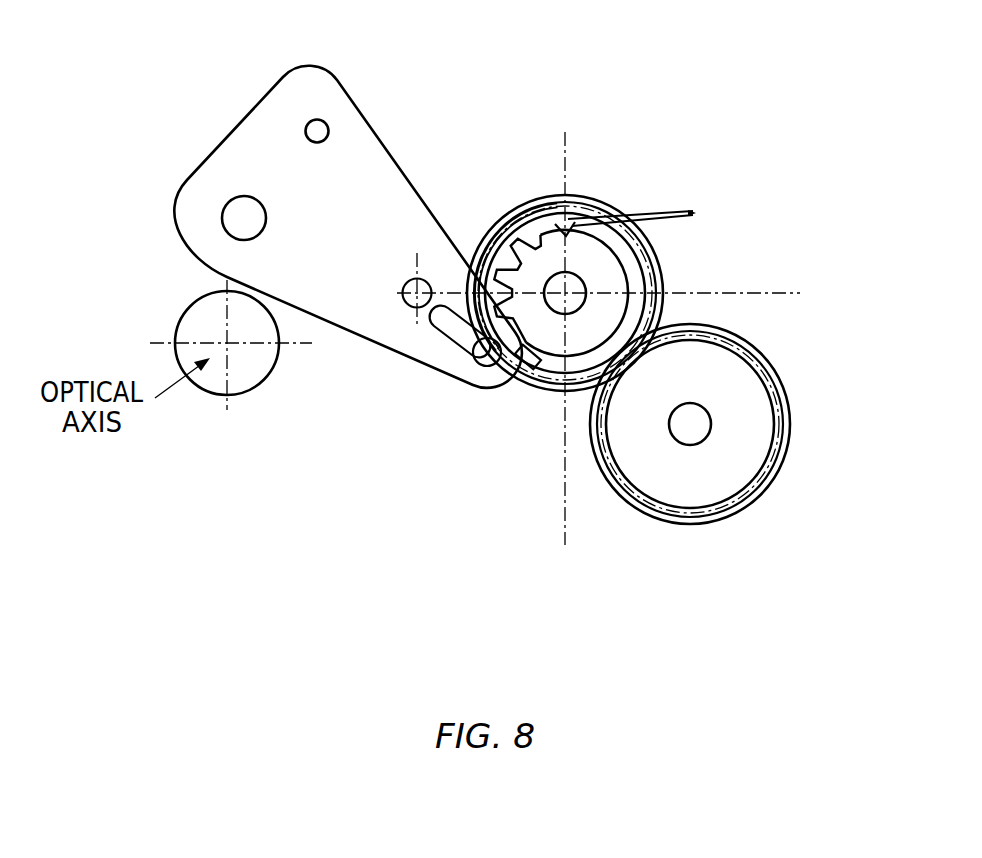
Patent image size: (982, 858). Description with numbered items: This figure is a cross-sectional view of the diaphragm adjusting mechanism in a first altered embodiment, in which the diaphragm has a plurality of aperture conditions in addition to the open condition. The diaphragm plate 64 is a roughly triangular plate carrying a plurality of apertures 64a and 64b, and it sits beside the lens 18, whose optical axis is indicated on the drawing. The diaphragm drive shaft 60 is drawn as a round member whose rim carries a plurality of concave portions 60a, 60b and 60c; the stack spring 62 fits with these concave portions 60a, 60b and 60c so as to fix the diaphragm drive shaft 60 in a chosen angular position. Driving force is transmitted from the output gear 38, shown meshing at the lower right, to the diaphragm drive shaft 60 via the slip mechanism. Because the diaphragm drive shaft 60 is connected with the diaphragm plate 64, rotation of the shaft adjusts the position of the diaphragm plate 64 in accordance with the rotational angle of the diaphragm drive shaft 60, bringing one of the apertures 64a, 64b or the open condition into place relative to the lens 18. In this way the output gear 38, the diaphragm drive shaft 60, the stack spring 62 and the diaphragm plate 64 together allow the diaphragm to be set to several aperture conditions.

The lens 18 is at (262, 385).
The output gear 38 is at (750, 408).
The diaphragm drive shaft 60 is at (598, 328).
The concave portion 60a is at (512, 280).
The concave portion 60b is at (526, 248).
The concave portion 60c is at (567, 226).
The stack spring 62 is at (602, 275).
The diaphragm plate 64 is at (324, 194).
The aperture 64a is at (236, 215).
The aperture 64b is at (310, 128).